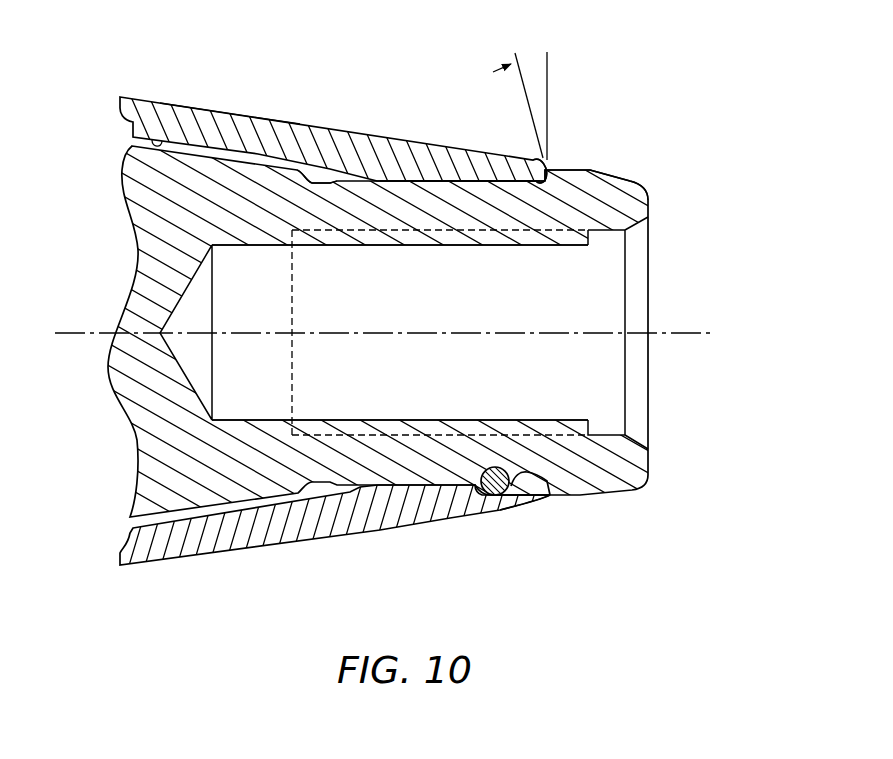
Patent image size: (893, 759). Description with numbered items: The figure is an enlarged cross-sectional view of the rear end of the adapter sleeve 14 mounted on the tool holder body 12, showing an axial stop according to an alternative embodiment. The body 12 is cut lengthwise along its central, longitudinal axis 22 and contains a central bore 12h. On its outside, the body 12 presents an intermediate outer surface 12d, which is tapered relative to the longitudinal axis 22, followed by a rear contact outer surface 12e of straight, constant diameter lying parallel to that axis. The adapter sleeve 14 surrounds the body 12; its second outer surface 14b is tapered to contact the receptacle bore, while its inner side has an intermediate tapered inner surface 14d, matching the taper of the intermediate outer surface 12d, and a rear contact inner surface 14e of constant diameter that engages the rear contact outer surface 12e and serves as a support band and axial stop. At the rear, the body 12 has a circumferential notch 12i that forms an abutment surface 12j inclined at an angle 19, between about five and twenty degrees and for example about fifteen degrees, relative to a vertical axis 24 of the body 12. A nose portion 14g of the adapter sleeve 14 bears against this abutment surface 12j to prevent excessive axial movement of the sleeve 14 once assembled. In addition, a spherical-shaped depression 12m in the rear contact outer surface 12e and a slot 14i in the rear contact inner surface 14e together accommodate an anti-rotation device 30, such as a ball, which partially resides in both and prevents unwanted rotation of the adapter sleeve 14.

The body 12 is at (708, 139).
The intermediate outer surface 12d is at (258, 165).
The rear contact outer surface 12e is at (450, 180).
The central bore 12h is at (573, 300).
The circumferential notch 12i is at (545, 188).
The abutment surface 12j is at (548, 170).
The spherical-shaped depression 12m is at (545, 482).
The adapter sleeve 14 is at (360, 115).
The second outer surface 14b is at (213, 110).
The intermediate tapered inner surface 14d is at (162, 138).
The rear contact inner surface 14e is at (420, 183).
The nose portion 14g is at (552, 170).
The slot 14i is at (516, 490).
The angle 19 is at (551, 57).
The central, longitudinal axis 22 is at (693, 334).
The vertical axis 24 is at (549, 89).
The anti-rotation device 30 is at (500, 460).